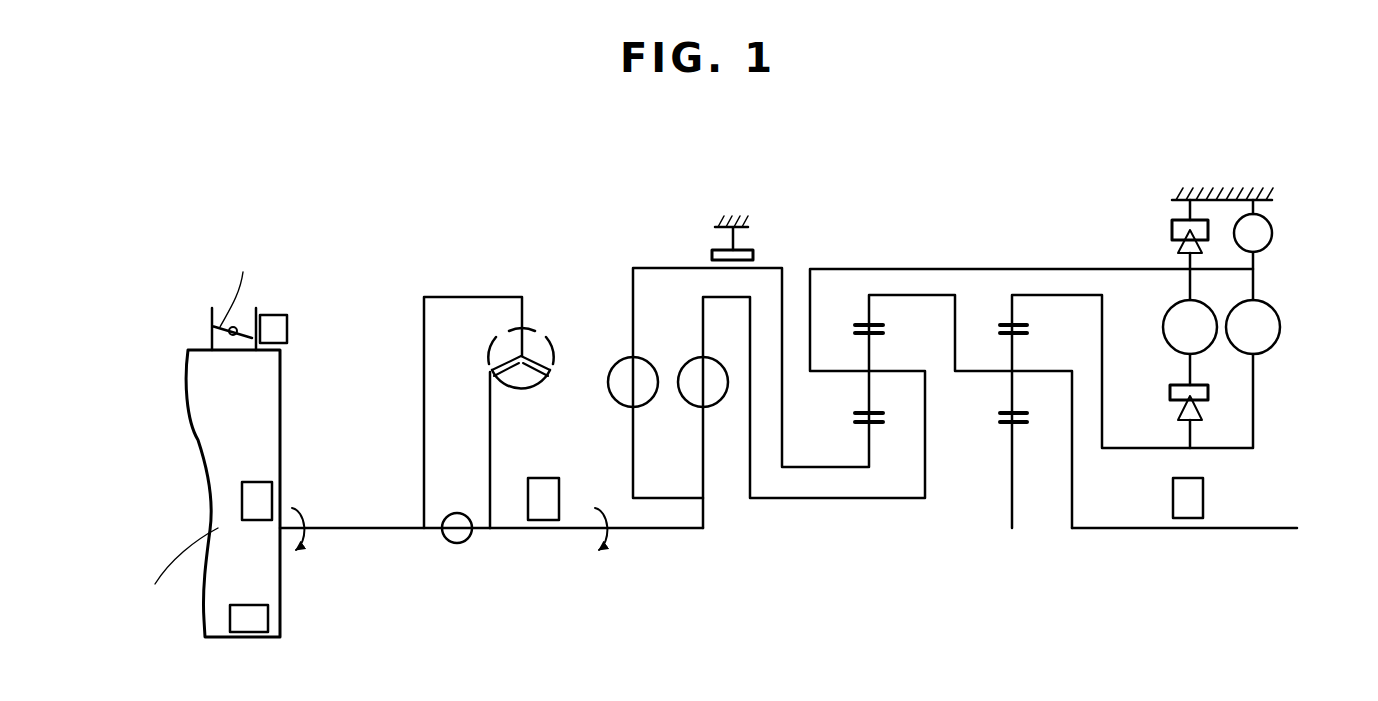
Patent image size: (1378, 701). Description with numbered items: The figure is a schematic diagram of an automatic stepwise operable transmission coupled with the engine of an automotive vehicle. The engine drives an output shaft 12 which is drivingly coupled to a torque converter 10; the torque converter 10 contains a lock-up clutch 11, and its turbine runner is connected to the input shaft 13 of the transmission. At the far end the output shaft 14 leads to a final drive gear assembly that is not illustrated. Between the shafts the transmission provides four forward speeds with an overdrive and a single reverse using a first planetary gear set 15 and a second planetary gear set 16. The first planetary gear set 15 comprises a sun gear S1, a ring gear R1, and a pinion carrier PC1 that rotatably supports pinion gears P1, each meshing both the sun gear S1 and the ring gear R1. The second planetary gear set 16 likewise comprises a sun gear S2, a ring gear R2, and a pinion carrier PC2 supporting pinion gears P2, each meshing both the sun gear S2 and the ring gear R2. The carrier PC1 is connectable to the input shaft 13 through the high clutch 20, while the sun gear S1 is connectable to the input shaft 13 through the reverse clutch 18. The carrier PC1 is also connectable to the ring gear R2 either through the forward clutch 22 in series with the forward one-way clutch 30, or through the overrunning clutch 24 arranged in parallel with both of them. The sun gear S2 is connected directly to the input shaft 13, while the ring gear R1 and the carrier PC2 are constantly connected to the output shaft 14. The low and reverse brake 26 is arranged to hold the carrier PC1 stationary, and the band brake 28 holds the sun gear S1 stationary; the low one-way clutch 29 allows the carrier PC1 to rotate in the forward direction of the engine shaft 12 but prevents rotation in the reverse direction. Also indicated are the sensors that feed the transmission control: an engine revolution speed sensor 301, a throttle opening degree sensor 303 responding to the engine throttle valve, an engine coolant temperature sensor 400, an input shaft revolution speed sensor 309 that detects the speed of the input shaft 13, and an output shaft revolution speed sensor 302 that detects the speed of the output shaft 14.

The torque converter 10 is at (545, 320).
The lock-up clutch 11 is at (457, 543).
The output shaft of engine 12 is at (380, 528).
The input shaft 13 is at (557, 530).
The output shaft 14 is at (1128, 528).
The first planetary gear set 15 is at (932, 364).
The second planetary gear set 16 is at (1096, 386).
The reverse clutch 18 is at (612, 398).
The high clutch 20 is at (690, 408).
The forward clutch 22 is at (1168, 344).
The overrunning clutch 24 is at (1278, 326).
The low and reverse brake 26 is at (1272, 228).
The band brake 28 is at (736, 238).
The low one-way clutch 29 is at (1172, 228).
The forward one-way clutch 30 is at (1172, 393).
The engine revolution speed sensor 301 is at (258, 481).
The output shaft revolution speed sensor 302 is at (1203, 500).
The throttle opening degree sensor 303 is at (287, 330).
The input shaft revolution speed sensor 309 is at (535, 478).
The engine coolant temperature sensor 400 is at (268, 618).
The ring gear R1 is at (872, 304).
The pinion carrier PC1 is at (897, 369).
The pinion gears P1 is at (866, 402).
The sun gear S1 is at (870, 456).
The ring gear R2 is at (1015, 305).
The pinion carrier PC2 is at (1055, 352).
The pinion gears P2 is at (1008, 402).
The sun gear S2 is at (1013, 506).